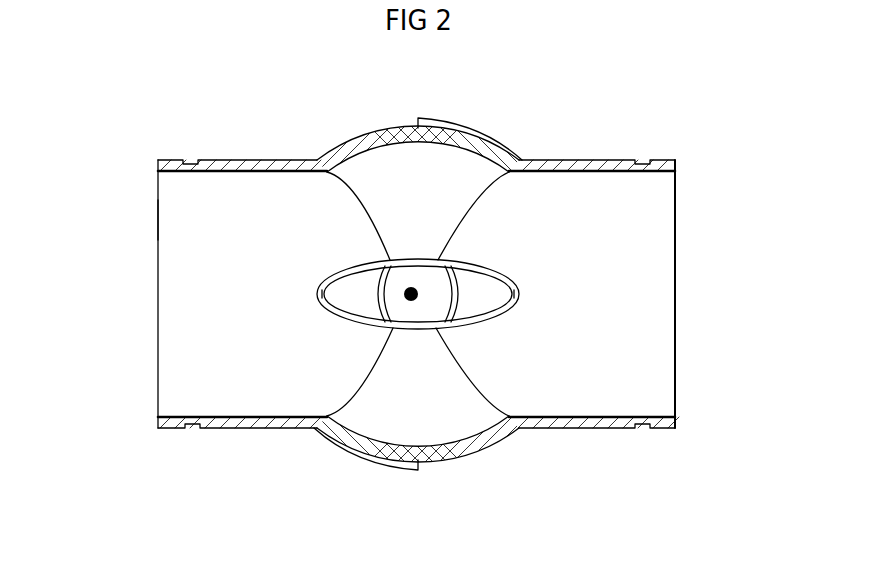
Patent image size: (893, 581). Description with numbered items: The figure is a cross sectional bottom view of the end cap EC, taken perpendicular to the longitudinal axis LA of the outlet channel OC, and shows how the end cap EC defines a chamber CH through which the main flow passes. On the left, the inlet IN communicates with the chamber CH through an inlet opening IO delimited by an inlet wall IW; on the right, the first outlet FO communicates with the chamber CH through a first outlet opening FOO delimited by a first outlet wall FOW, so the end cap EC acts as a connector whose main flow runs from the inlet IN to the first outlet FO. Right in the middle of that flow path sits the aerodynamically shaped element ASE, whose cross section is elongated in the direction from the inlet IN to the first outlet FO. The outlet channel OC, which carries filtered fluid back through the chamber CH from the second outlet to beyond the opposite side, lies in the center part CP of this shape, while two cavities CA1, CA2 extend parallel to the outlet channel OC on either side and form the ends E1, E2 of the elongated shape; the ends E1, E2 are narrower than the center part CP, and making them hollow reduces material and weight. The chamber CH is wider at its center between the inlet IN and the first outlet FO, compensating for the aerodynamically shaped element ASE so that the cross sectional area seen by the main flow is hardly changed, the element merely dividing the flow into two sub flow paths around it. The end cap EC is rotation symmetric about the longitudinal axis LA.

The inlet IN is at (108, 224).
The inlet opening IO is at (138, 342).
The inlet wall IW is at (160, 429).
The first outlet FO is at (688, 208).
The first outlet opening FOO is at (683, 301).
The first outlet wall FOW is at (655, 428).
The end cap EC is at (588, 160).
The chamber CH is at (608, 325).
The center part CP is at (420, 236).
The outlet channel OC is at (409, 277).
The first cavity CA1 is at (350, 272).
The second cavity CA2 is at (478, 278).
The first end E1 is at (311, 271).
The second end E2 is at (525, 286).
The aerodynamically shaped element ASE is at (348, 319).
The longitudinal axis LA is at (411, 294).